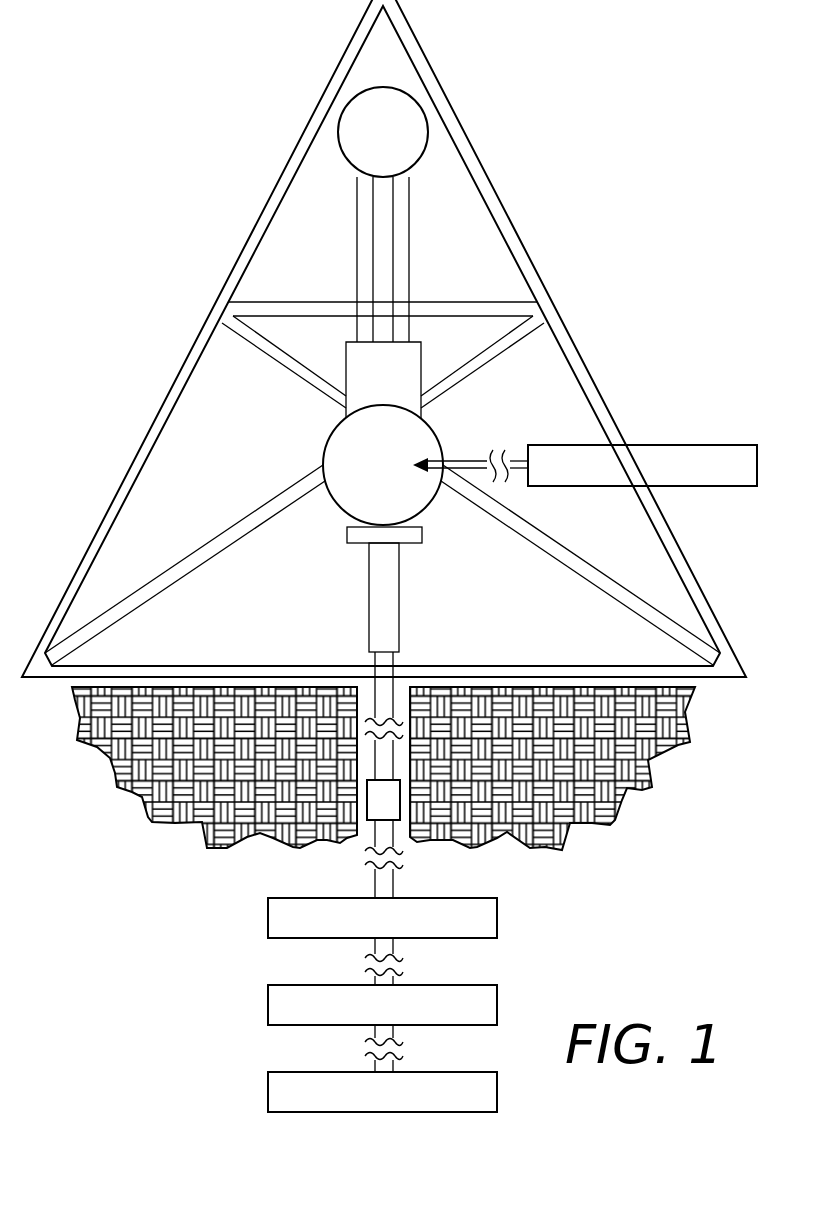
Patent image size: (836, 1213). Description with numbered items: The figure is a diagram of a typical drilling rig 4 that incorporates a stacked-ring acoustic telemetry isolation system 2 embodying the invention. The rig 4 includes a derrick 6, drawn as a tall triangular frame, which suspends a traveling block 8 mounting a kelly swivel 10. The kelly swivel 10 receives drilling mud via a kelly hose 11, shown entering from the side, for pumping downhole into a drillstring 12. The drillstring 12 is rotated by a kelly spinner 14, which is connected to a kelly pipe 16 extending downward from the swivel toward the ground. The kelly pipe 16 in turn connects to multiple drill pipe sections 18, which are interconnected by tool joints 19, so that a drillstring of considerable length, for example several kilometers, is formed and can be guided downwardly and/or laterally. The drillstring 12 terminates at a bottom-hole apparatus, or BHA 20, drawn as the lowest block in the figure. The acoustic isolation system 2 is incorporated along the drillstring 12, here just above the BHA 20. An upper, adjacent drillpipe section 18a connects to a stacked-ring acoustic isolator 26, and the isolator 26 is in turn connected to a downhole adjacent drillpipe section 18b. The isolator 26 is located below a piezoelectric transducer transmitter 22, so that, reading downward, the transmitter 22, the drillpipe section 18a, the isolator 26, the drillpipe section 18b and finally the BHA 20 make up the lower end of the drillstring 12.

The stacked-ring acoustic telemetry isolation system 2 is at (556, 923).
The drilling rig 4 is at (568, 148).
The derrick 6 is at (449, 103).
The traveling block 8 is at (383, 380).
The kelly swivel 10 is at (383, 465).
The kelly hose 11 is at (468, 458).
The drillstring 12 is at (425, 650).
The kelly spinner 14 is at (422, 543).
The kelly pipe 16 is at (401, 600).
The drill pipe sections 18 is at (395, 866).
The upper adjacent drillpipe section 18a is at (398, 972).
The downhole adjacent drillpipe section 18b is at (398, 1052).
The tool joints 19 is at (367, 820).
The bottom-hole apparatus (BHA) 20 is at (268, 1078).
The piezoelectric transducer (PZT) transmitter 22 is at (268, 905).
The stacked-ring acoustic isolator 26 is at (268, 990).